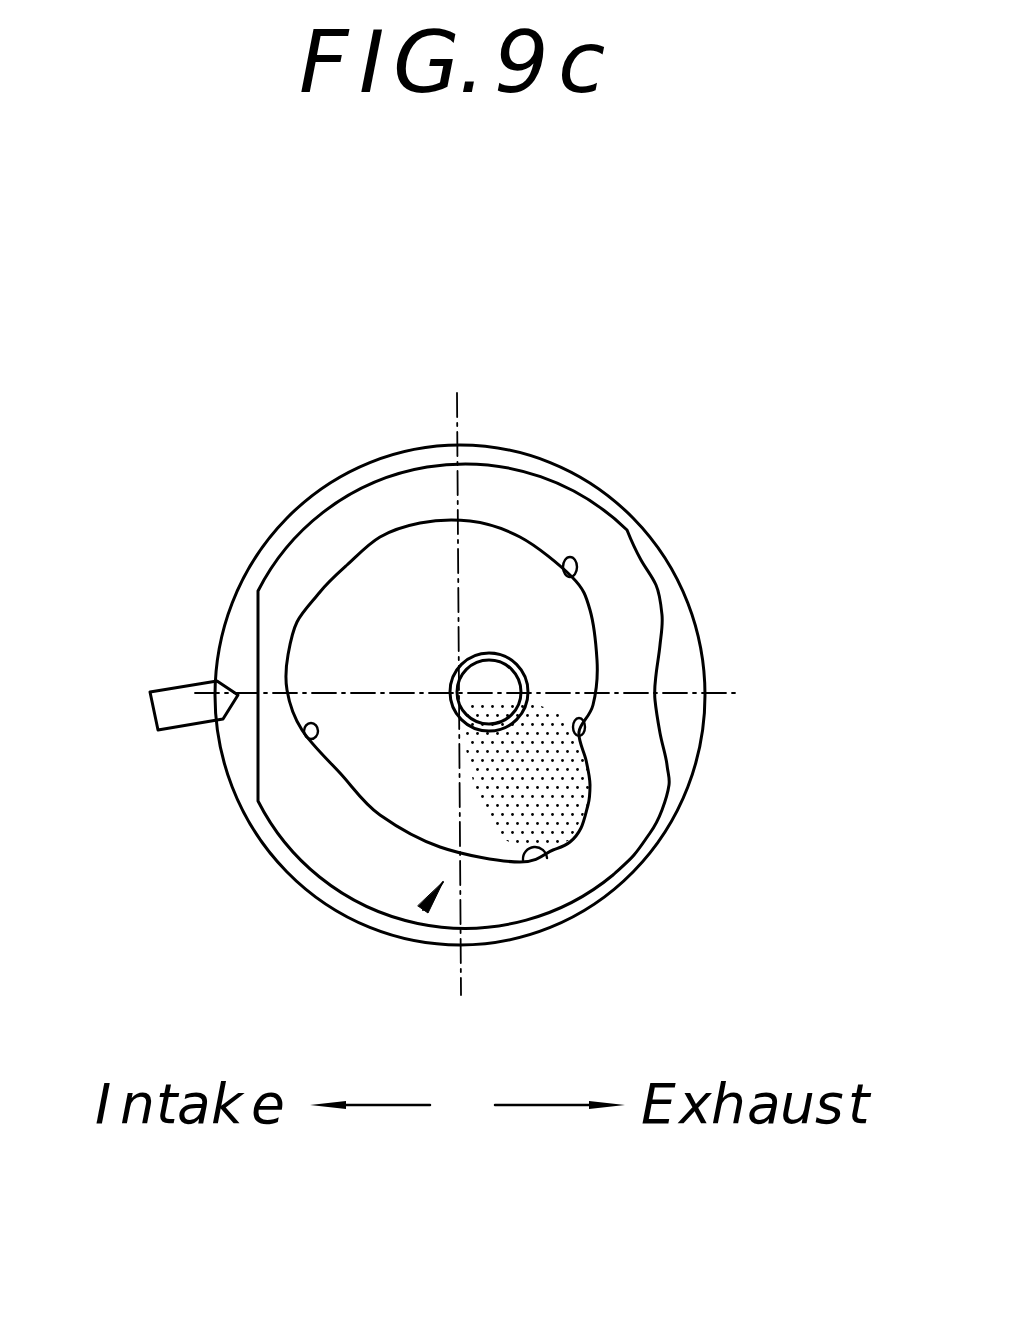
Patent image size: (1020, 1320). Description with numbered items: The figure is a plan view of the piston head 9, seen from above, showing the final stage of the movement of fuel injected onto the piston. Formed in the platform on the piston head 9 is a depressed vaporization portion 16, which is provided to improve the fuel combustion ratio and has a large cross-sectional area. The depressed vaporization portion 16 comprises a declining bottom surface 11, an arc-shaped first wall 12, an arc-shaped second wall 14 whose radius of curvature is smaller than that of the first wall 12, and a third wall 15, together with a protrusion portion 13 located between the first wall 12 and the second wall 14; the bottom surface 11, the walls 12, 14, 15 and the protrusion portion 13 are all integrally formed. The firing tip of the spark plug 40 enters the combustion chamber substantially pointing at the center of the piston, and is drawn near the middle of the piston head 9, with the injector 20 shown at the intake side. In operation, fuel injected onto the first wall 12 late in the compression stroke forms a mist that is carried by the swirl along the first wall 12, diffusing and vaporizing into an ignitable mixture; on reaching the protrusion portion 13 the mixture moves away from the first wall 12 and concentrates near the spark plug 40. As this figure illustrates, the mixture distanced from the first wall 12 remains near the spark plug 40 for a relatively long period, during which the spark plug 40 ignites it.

The piston head 9 is at (690, 638).
The declining bottom surface 11 is at (420, 560).
The first wall 12 is at (582, 570).
The protrusion portion 13 is at (586, 722).
The second wall 14 is at (527, 860).
The third wall 15 is at (304, 734).
The depressed vaporization portion 16 is at (423, 910).
The fuel injector 20 is at (165, 688).
The spark plug 40 is at (487, 667).